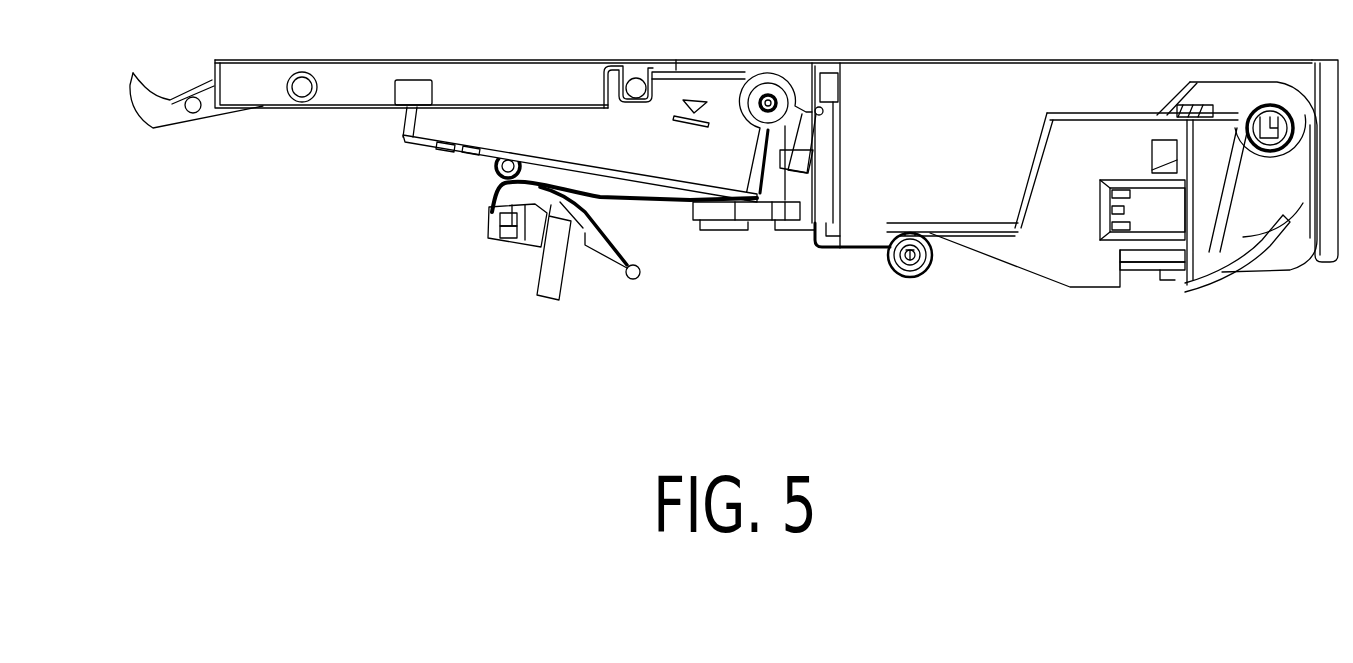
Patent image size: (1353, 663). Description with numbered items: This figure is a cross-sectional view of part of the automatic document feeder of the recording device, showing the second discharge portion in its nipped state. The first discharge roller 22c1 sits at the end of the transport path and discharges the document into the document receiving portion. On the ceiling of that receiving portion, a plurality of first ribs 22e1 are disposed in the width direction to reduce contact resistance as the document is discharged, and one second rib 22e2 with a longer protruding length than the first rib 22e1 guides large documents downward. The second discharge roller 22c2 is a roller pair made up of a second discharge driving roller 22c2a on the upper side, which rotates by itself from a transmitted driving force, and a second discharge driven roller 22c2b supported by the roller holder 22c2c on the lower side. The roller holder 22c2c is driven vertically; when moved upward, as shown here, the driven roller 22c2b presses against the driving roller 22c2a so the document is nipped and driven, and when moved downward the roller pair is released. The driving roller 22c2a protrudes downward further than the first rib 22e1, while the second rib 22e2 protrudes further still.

The first discharge roller 22c1 is at (907, 283).
The second discharge roller 22c2 is at (419, 236).
The second discharge driving roller 22c2a is at (490, 172).
The second discharge driven roller 22c2b is at (490, 207).
The roller holder 22c2c is at (488, 238).
The first rib 22e1 is at (640, 201).
The second rib 22e2 is at (608, 200).